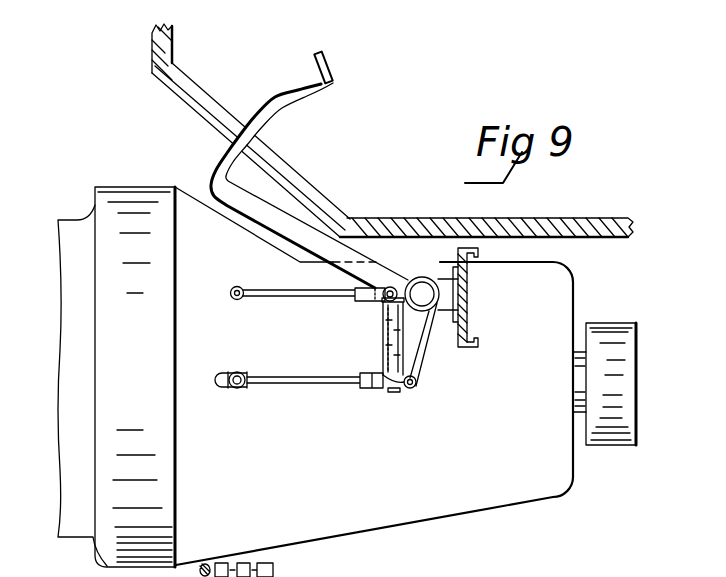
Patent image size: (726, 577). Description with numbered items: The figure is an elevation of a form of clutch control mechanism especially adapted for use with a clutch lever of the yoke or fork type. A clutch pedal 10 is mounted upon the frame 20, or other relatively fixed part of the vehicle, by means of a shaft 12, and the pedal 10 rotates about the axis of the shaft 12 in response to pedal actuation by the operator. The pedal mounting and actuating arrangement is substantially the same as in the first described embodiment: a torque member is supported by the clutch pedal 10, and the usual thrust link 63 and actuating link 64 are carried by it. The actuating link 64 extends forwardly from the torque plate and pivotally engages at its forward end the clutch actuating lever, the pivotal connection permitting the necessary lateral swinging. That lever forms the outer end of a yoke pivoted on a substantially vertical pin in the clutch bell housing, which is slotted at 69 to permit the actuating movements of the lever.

The clutch pedal 10 is at (241, 202).
The shaft 12 is at (423, 297).
The frame 20 is at (469, 298).
The thrust link 63 is at (284, 298).
The actuating link 64 is at (298, 385).
The slot 69 is at (222, 387).